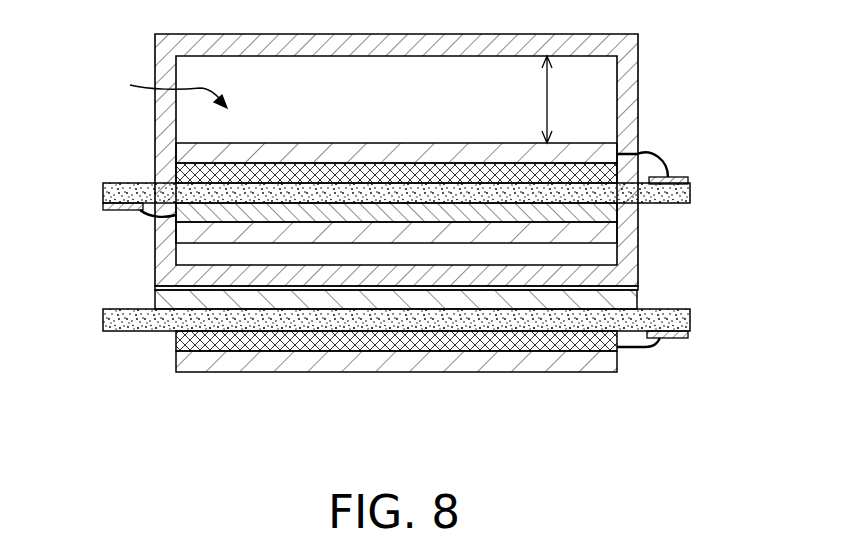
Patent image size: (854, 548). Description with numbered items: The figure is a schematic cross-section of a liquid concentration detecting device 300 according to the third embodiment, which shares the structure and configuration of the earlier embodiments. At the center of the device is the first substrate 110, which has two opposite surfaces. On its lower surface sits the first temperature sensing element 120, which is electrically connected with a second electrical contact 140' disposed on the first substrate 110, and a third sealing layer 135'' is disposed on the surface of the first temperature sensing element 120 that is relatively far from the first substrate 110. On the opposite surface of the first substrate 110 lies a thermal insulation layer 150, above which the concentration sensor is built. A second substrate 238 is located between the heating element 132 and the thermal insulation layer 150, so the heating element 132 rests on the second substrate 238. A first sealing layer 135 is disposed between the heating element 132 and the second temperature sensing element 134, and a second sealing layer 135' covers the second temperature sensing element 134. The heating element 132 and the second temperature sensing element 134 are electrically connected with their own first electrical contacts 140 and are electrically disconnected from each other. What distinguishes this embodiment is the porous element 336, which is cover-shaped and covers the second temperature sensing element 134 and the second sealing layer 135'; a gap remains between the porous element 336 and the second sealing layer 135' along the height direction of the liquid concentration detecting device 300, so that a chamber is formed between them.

The liquid concentration detecting device 300 is at (398, 248).
The porous element 336 is at (632, 82).
The second sealing layer 135' is at (472, 125).
The second temperature sensing element 134 is at (640, 153).
The first electrical contacts 140 is at (395, 179).
The second substrate 238 is at (690, 197).
The heating element 132 is at (608, 218).
The first sealing layer 135 is at (469, 239).
The thermal insulation layer 150 is at (638, 297).
The first substrate 110 is at (683, 322).
The second electrical contact 140' is at (436, 328).
The first temperature sensing element 120 is at (610, 348).
The third sealing layer 135'' is at (446, 382).